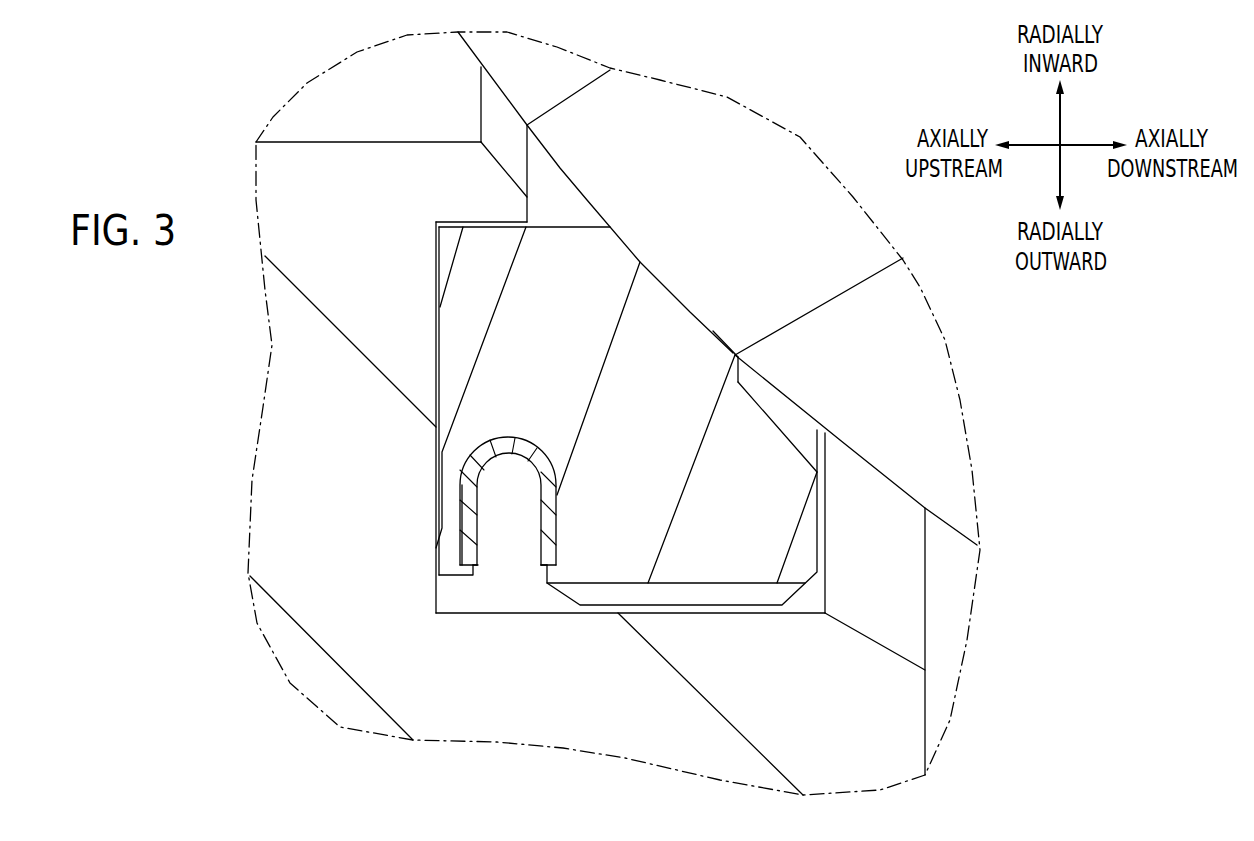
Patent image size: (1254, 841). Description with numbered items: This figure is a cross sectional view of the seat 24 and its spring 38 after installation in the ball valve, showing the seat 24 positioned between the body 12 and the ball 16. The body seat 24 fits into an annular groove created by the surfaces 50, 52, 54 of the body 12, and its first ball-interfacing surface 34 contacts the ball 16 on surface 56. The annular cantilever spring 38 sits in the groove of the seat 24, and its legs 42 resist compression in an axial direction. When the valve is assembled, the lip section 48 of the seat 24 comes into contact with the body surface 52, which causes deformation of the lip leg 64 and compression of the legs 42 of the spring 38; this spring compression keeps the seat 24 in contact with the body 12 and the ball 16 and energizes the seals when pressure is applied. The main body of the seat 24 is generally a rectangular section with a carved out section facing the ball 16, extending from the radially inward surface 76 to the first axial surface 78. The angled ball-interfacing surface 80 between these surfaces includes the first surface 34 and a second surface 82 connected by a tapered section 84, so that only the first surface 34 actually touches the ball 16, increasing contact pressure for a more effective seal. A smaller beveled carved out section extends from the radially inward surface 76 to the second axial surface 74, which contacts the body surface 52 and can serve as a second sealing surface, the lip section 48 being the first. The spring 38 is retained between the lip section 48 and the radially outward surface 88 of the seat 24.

The body 12 is at (373, 657).
The ball 16 is at (713, 132).
The seat 24 is at (653, 424).
The surface 34 is at (727, 347).
The spring 38 is at (513, 452).
The legs 42 is at (543, 558).
The lip section 48 is at (440, 564).
The surface 50 is at (463, 222).
The surface 52 is at (436, 270).
The surface 54 is at (610, 615).
The surface 56 is at (737, 352).
The lip leg 64 is at (455, 488).
The second axial surface 74 is at (440, 388).
The radially inward surface 76 is at (543, 228).
The first axial surface 78 is at (817, 522).
The ball-interfacing surface 80 is at (711, 376).
The second surface 82 is at (782, 433).
The tapered section 84 is at (737, 377).
The radially outward surface 88 is at (618, 605).